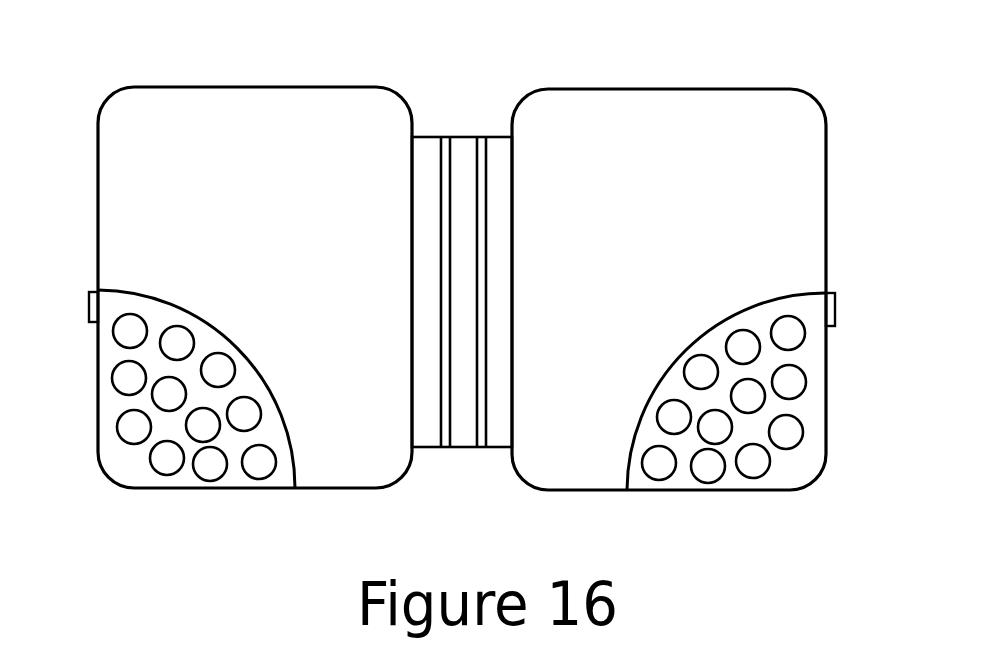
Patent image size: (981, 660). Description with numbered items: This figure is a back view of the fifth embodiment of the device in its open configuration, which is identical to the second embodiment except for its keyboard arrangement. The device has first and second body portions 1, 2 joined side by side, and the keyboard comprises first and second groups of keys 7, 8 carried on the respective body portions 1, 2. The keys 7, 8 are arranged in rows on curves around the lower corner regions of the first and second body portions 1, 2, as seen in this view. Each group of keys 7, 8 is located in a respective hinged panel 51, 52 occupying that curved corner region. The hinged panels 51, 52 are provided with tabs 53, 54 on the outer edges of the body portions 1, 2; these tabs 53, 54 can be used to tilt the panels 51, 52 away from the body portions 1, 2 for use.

The first body portion 1 is at (658, 110).
The second body portion 2 is at (252, 100).
The first group of keys 7 is at (787, 473).
The second group of keys 8 is at (240, 477).
The hinged panel 51 is at (807, 466).
The hinged panel 52 is at (134, 465).
The tab 53 is at (835, 307).
The tab 54 is at (90, 297).